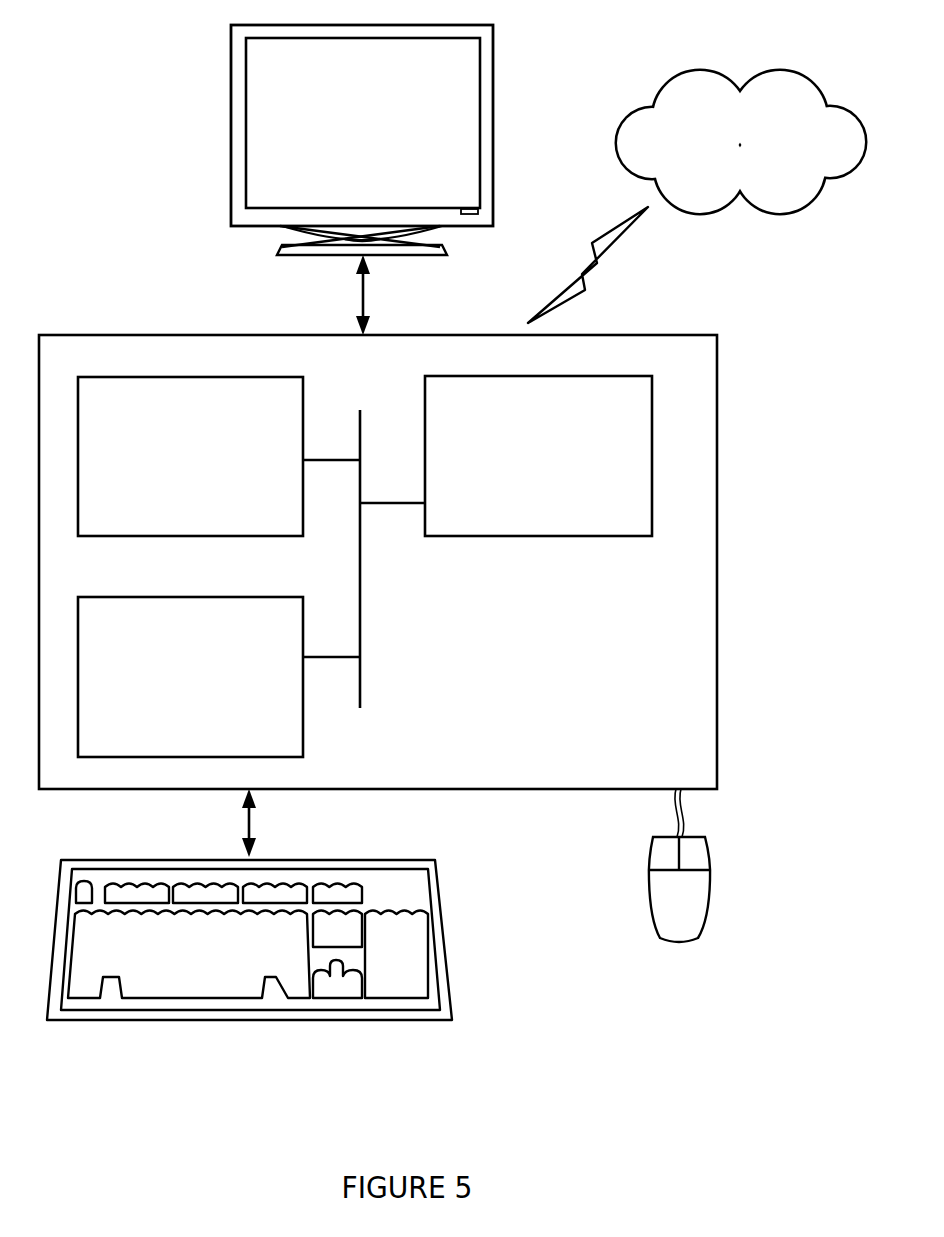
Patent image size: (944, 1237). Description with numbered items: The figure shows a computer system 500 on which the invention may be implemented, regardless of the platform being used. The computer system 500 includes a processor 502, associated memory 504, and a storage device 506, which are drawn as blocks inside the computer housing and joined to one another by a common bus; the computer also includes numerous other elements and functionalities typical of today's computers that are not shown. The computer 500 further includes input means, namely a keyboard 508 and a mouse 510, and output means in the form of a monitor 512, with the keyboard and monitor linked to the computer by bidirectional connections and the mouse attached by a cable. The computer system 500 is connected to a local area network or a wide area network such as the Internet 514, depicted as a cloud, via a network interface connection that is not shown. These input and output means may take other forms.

The computer system 500 is at (148, 182).
The processor 502 is at (533, 470).
The associated memory 504 is at (168, 468).
The storage device 506 is at (165, 690).
The keyboard 508 is at (160, 978).
The mouse 510 is at (657, 912).
The monitor 512 is at (341, 148).
The network 514 is at (721, 152).